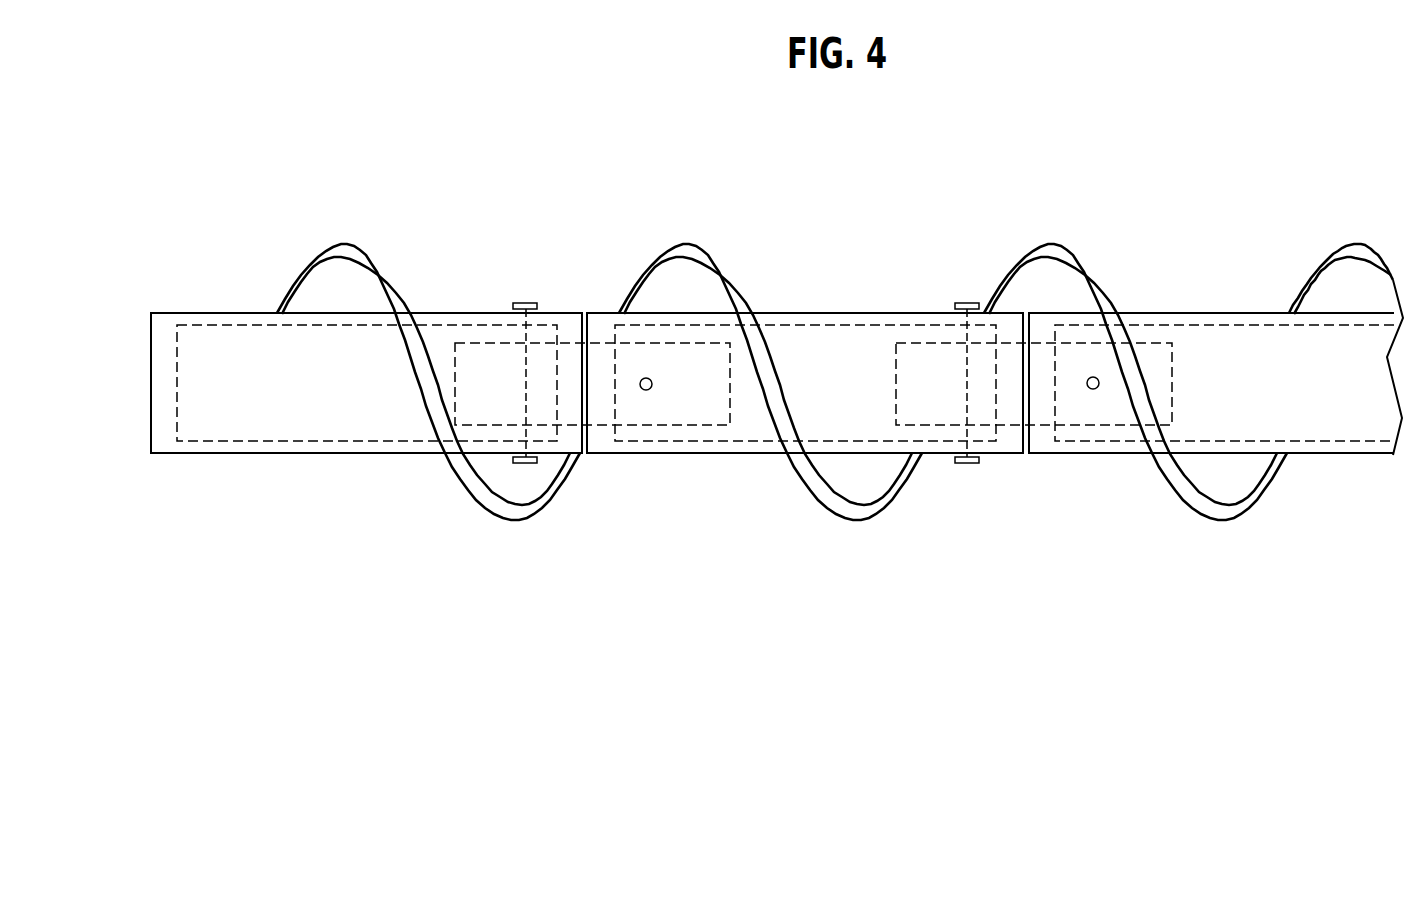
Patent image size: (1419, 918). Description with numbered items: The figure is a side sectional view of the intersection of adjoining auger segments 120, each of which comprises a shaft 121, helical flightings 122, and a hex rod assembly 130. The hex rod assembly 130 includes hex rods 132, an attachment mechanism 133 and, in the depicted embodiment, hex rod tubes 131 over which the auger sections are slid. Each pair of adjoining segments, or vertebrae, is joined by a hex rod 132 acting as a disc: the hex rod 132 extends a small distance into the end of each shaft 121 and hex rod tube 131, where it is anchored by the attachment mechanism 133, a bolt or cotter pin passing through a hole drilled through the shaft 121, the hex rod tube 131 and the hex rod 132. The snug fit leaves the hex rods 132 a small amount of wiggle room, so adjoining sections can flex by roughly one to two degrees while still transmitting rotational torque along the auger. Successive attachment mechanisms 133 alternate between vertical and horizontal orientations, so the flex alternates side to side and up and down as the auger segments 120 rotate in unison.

The auger segment 120 is at (452, 205).
The shaft 121 is at (178, 310).
The flightings 122 is at (557, 503).
The hex rod assembly 130 is at (492, 277).
The hex rod tube 131 is at (218, 320).
The hex rod 132 is at (598, 340).
The attachment mechanism 133 is at (528, 295).